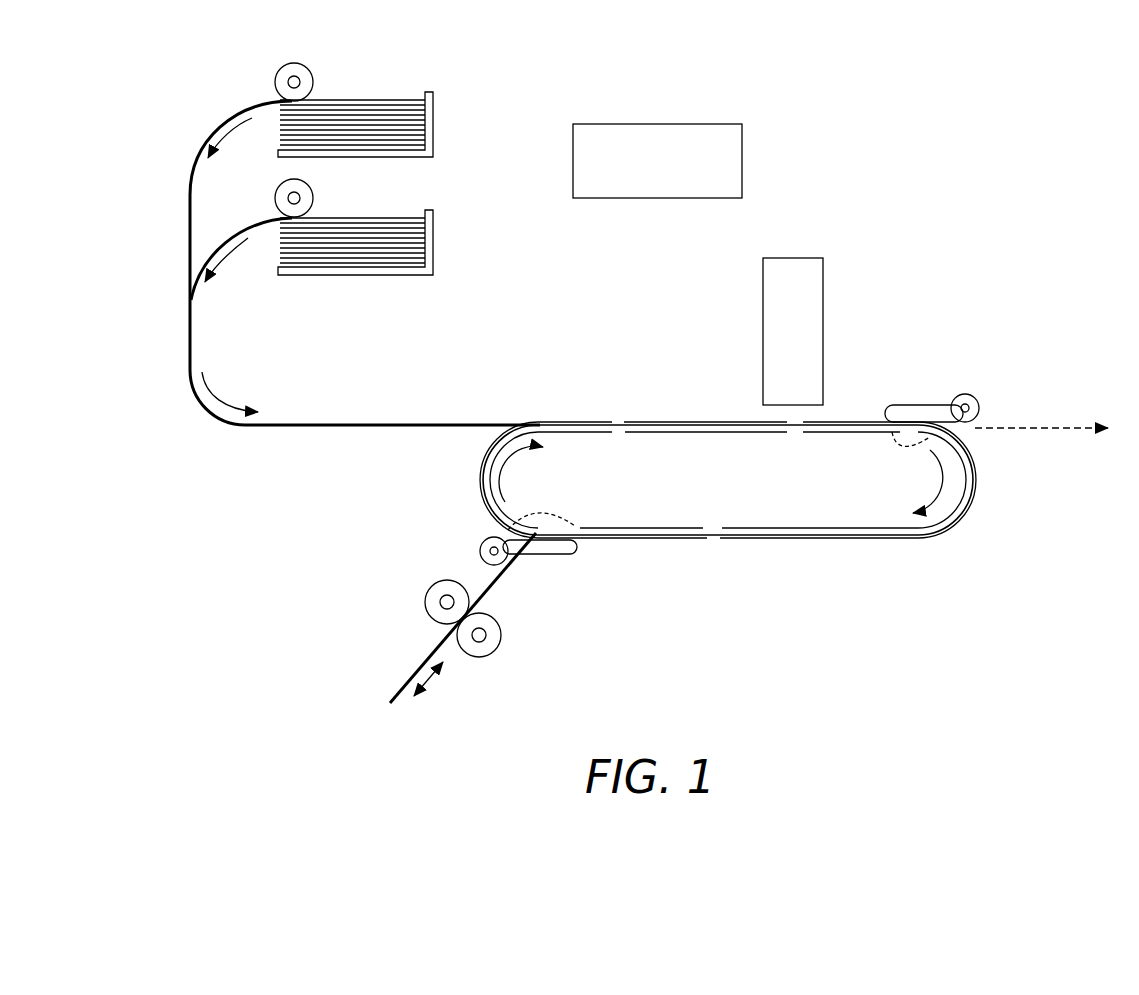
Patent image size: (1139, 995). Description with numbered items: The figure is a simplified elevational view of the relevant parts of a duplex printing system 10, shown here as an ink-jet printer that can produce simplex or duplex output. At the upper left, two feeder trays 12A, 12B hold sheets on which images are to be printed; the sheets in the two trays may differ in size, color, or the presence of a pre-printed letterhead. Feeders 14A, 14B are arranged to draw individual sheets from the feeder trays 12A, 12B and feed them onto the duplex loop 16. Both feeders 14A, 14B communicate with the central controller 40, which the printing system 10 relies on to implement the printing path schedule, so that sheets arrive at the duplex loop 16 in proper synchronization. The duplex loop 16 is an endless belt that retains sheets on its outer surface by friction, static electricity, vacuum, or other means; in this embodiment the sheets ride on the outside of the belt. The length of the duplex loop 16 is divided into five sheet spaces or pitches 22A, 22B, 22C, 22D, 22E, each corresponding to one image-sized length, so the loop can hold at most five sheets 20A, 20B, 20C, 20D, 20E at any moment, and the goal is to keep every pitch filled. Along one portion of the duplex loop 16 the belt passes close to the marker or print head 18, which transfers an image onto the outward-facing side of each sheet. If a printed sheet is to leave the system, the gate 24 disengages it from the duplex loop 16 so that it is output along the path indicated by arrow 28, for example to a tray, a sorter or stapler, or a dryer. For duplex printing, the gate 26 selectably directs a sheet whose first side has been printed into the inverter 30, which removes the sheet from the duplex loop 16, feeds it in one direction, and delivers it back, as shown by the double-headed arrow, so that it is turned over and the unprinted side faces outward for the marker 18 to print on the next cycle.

The duplex printing system 10 is at (938, 160).
The feeder tray 12A is at (402, 98).
The feeder tray 12B is at (407, 215).
The feeder 14A is at (299, 64).
The feeder 14B is at (312, 195).
The duplex loop 16 is at (622, 422).
The marker or print head 18 is at (823, 297).
The sheet 20A is at (730, 422).
The sheet 20B is at (852, 422).
The sheet 20C is at (814, 538).
The sheet 20D is at (633, 538).
The sheet 20E is at (558, 422).
The pitch 22A is at (720, 434).
The pitch 22B is at (863, 434).
The pitch 22C is at (790, 527).
The pitch 22D is at (580, 525).
The pitch 22E is at (551, 433).
The gate 24 is at (966, 394).
The gate 26 is at (482, 547).
The output path arrow 28 is at (1048, 425).
The inverter 30 is at (408, 600).
The central controller 40 is at (742, 150).